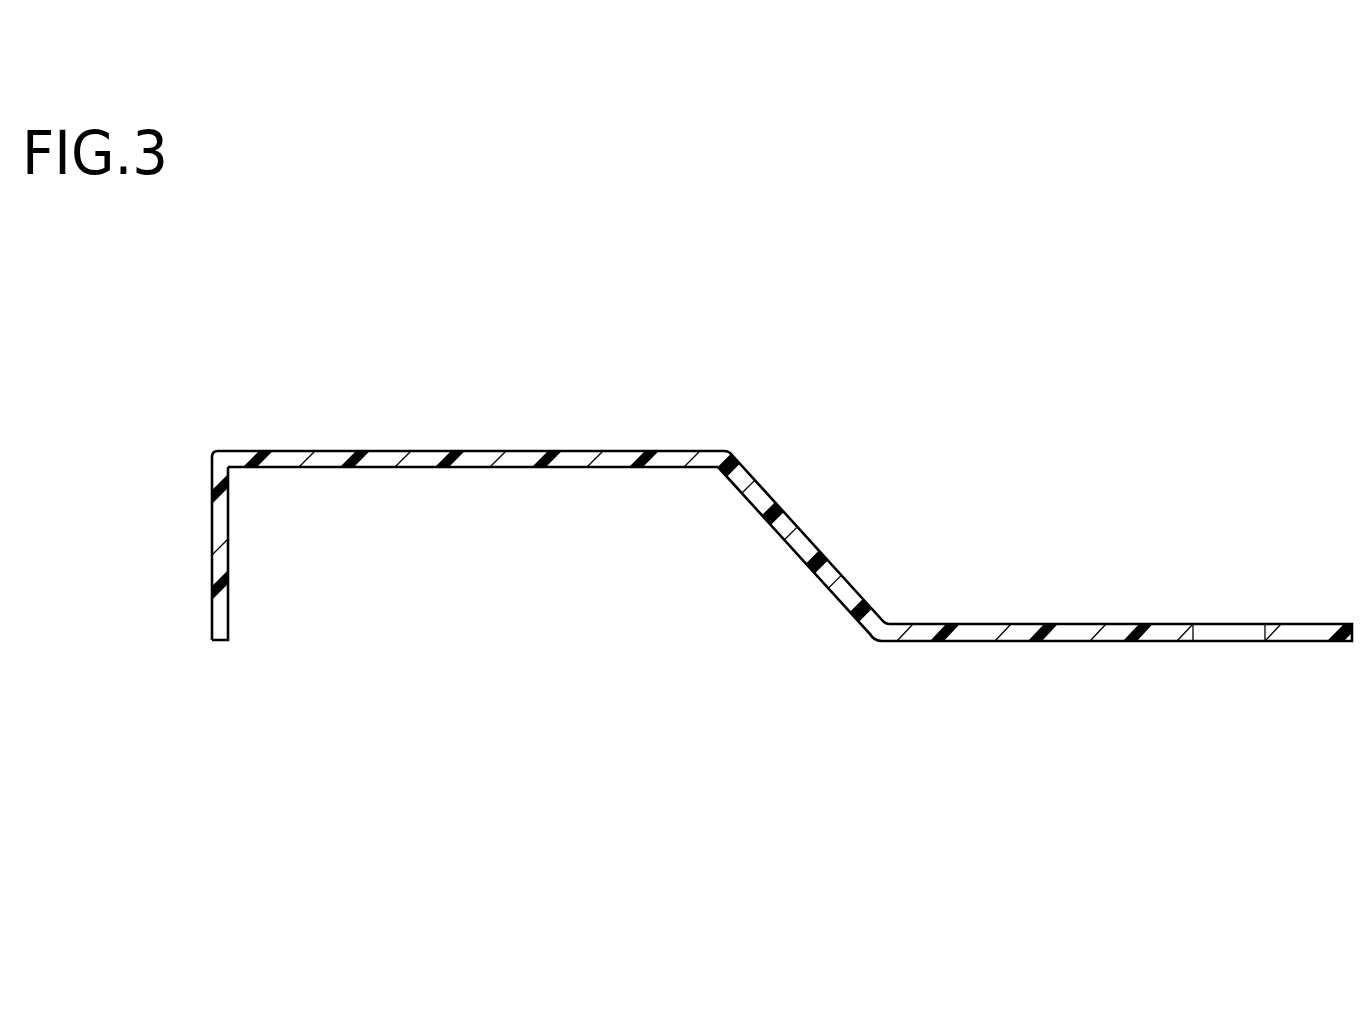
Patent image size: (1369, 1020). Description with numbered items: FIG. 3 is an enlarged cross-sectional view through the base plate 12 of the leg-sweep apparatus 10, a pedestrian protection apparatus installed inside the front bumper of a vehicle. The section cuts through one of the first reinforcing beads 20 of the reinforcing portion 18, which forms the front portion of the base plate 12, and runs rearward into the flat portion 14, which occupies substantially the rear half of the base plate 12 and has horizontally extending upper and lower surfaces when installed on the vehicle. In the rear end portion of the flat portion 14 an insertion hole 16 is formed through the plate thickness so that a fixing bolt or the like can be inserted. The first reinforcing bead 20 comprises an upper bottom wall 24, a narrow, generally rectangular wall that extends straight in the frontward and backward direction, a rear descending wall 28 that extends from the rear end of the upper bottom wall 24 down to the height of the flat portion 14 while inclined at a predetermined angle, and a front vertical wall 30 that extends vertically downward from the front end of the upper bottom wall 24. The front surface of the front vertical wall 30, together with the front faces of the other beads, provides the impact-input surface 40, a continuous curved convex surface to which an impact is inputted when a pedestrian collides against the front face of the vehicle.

The leg-sweep apparatus 10 is at (852, 344).
The base plate 12 is at (908, 759).
The flat portion 14 is at (1024, 656).
The insertion hole 16 is at (1255, 624).
The reinforcing portion 18 is at (811, 598).
The first reinforcing bead 20 is at (437, 440).
The upper bottom wall 24 is at (521, 458).
The rear descending wall 28 is at (810, 553).
The front vertical wall 30 is at (222, 571).
The impact-input surface 40 is at (211, 528).